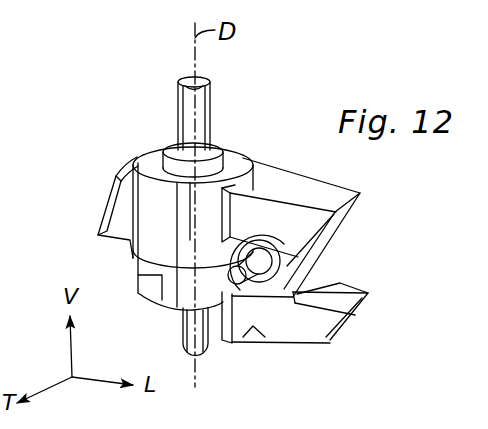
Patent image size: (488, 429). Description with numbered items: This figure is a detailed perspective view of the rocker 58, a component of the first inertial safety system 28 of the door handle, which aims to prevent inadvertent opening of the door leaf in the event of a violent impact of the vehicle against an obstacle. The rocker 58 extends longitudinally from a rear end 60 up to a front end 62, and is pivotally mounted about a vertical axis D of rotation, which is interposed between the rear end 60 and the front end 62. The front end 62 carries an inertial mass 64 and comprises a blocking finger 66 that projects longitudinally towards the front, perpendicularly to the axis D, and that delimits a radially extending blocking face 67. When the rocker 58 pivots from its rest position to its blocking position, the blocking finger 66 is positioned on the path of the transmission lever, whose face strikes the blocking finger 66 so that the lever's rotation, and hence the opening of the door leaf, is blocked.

The first inertial safety system 28 is at (254, 106).
The rocker 58 is at (292, 132).
The rear end 60 is at (117, 173).
The front end 62 is at (340, 222).
The inertial mass 64 is at (250, 272).
The blocking finger 66 is at (360, 336).
The blocking face 67 is at (344, 297).